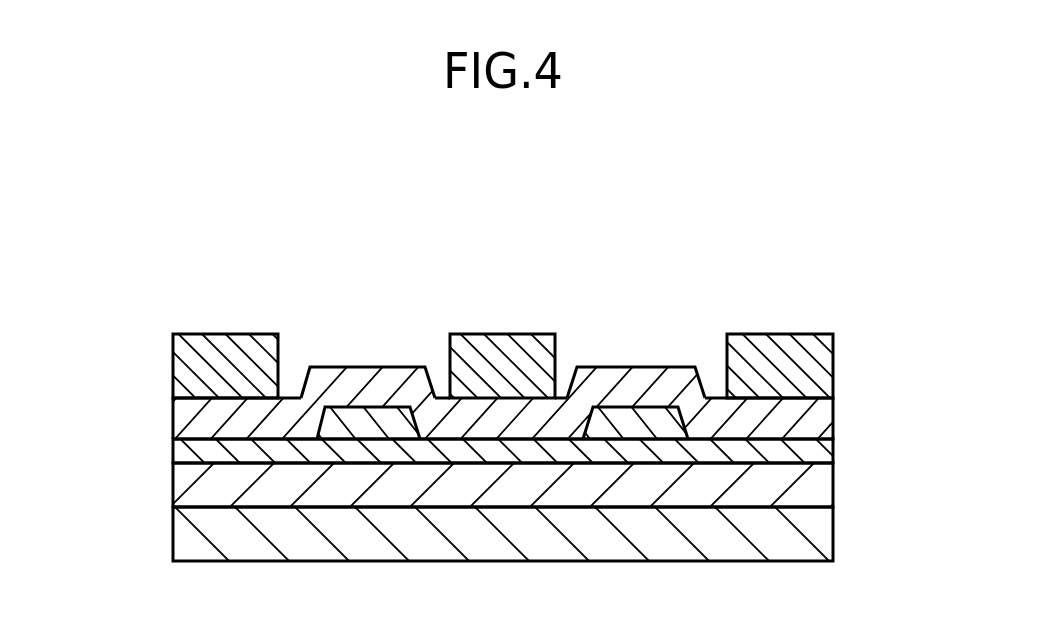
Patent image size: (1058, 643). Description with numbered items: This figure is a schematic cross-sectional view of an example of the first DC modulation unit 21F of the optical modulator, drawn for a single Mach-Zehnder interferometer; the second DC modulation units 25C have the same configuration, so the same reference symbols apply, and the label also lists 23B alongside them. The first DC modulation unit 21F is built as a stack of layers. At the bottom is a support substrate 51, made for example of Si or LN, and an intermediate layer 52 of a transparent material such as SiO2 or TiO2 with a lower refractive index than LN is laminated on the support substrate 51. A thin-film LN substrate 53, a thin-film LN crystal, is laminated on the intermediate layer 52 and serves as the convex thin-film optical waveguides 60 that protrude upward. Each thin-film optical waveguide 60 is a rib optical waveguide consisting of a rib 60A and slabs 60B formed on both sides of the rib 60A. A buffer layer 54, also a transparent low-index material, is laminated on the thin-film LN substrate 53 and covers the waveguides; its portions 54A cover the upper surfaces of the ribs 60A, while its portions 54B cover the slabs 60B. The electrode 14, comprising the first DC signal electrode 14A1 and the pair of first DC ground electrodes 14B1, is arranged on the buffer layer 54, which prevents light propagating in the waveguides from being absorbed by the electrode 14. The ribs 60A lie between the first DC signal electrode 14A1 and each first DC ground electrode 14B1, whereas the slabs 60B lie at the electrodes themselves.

The first DC modulation unit 21F is at (828, 150).
The transistor 23B is at (500, 417).
The second DC modulation unit 25C is at (500, 417).
The electrode 14 is at (492, 325).
The first DC signal electrode 14A1 is at (501, 365).
The first DC ground electrode 14B1 is at (778, 365).
The support substrate 51 is at (820, 532).
The intermediate layer 52 is at (820, 487).
The thin-film LN substrate 53 is at (820, 450).
The buffer layer 54 is at (500, 349).
The portion of buffer layer covering rib upper surface 54A is at (609, 378).
The portion of buffer layer covering slabs 54B is at (187, 413).
The thin-film optical waveguide 60 is at (498, 417).
The rib 60A is at (643, 433).
The slab 60B is at (282, 452).